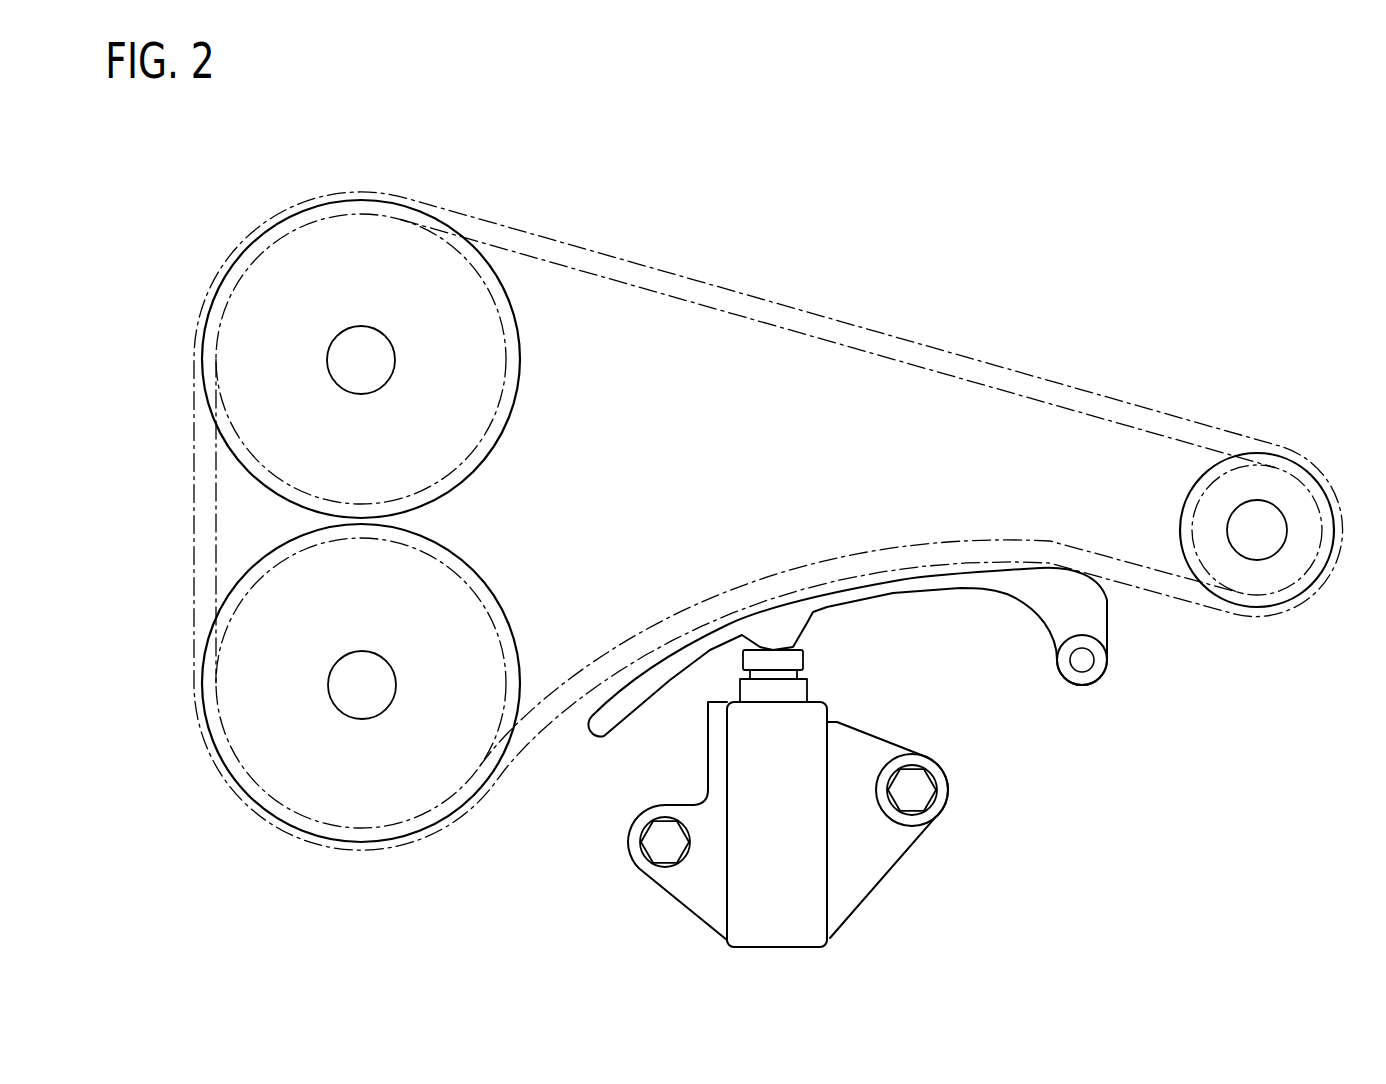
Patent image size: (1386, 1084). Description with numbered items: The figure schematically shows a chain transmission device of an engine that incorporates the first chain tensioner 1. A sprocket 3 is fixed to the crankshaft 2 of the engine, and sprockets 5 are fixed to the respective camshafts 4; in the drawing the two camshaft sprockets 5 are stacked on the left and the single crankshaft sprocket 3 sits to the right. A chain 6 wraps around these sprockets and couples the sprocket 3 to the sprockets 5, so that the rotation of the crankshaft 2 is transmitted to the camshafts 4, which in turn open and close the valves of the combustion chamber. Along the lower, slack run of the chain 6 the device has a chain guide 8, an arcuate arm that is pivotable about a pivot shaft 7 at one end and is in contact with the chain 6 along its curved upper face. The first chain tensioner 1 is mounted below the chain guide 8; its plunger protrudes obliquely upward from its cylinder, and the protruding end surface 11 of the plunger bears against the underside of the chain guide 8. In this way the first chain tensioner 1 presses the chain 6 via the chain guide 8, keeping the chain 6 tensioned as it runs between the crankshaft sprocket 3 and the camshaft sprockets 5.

The first chain tensioner 1 is at (680, 920).
The crankshaft 2 is at (1252, 545).
The sprocket 3 is at (1310, 577).
The camshaft 4 is at (355, 348).
The sprocket 5 is at (230, 292).
The chain 6 is at (773, 327).
The pivot shaft 7 is at (1083, 662).
The chain guide 8 is at (597, 730).
The protruding end surface 11 is at (803, 637).